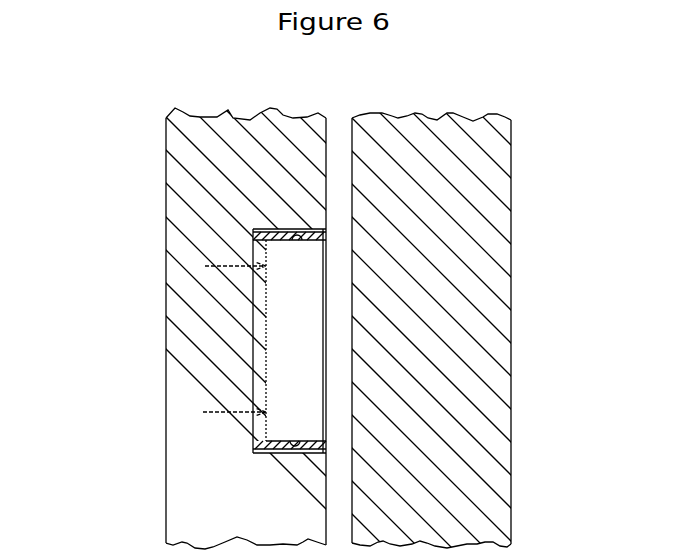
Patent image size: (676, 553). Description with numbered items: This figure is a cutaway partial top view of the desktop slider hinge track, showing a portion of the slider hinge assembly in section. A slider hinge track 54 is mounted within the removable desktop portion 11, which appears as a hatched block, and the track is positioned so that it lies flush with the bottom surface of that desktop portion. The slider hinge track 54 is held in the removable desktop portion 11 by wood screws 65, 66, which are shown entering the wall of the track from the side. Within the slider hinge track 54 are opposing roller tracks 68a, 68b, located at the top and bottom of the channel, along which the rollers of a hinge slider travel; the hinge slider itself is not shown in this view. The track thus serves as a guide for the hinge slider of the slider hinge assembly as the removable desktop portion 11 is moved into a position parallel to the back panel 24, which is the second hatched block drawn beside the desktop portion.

The removable desktop portion 11 is at (190, 213).
The back panel 24 is at (458, 257).
The slider hinge track 54 is at (259, 299).
The wood screw 65 is at (253, 268).
The wood screw 66 is at (252, 410).
The roller track 68a is at (297, 243).
The roller track 68b is at (295, 441).